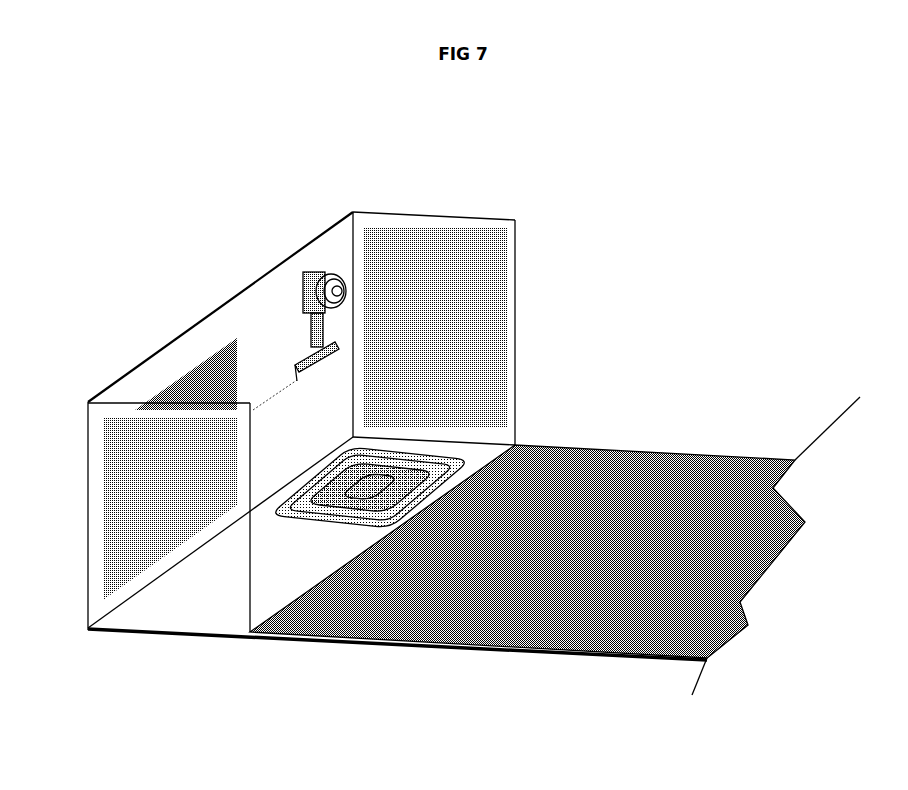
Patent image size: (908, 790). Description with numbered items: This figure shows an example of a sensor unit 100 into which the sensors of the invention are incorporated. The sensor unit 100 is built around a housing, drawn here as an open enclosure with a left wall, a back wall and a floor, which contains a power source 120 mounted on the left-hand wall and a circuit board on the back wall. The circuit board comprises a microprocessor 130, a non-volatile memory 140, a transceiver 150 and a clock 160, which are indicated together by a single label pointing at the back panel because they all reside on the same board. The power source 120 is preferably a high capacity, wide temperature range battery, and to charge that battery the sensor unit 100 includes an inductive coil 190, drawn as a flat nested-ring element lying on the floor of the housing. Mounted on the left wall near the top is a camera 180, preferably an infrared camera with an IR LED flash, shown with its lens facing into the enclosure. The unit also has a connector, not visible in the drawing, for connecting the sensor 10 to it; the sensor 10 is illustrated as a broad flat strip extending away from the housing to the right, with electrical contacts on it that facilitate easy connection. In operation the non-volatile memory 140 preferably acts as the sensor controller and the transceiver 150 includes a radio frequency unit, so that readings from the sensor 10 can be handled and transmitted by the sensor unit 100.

The sensor unit 100 is at (790, 284).
The sensor 10 is at (645, 478).
The power source 120 is at (148, 443).
The microprocessor 130 is at (561, 299).
The non-volatile memory 140 is at (435, 327).
The transceiver 150 is at (435, 327).
The clock 160 is at (420, 268).
The camera 180 is at (321, 265).
The inductive coil 190 is at (468, 457).